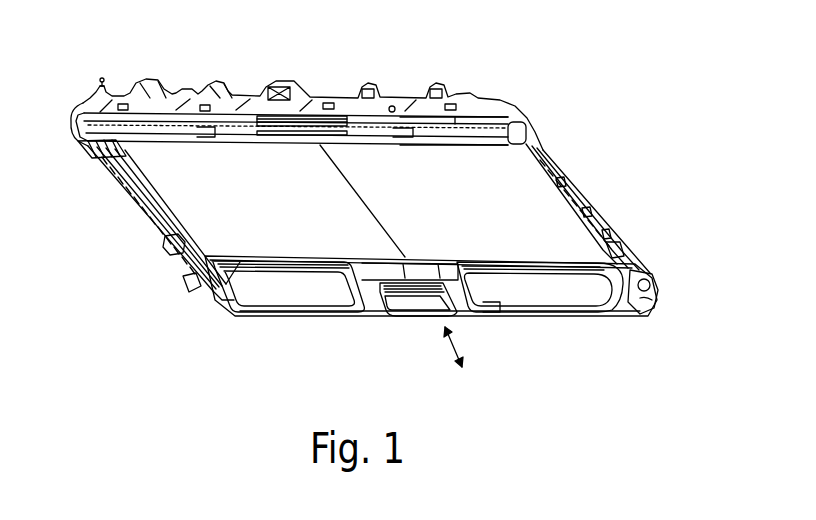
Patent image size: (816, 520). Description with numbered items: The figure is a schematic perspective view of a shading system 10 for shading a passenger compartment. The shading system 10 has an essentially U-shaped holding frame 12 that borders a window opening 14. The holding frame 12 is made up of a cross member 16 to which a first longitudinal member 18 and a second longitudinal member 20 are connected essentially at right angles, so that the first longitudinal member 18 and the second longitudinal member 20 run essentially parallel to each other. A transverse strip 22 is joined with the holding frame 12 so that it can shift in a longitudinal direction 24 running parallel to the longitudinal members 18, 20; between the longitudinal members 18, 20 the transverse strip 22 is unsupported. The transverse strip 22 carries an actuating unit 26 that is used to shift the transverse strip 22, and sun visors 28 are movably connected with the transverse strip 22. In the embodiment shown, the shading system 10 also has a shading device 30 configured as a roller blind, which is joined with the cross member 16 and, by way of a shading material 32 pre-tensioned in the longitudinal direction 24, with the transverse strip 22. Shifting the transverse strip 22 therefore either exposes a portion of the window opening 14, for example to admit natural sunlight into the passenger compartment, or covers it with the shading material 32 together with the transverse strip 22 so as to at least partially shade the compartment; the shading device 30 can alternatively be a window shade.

The shading system 10 is at (367, 213).
The holding frame 12 is at (101, 86).
The window opening 14 is at (541, 218).
The cross member 16 is at (335, 99).
The first longitudinal member 18 is at (607, 214).
The second longitudinal member 20 is at (131, 180).
The transverse strip 22 is at (366, 316).
The longitudinal direction 24 is at (460, 350).
The actuating unit 26 is at (410, 318).
The sun visors 28 is at (293, 300).
The shading device 30 is at (454, 123).
The shading material 32 is at (220, 218).